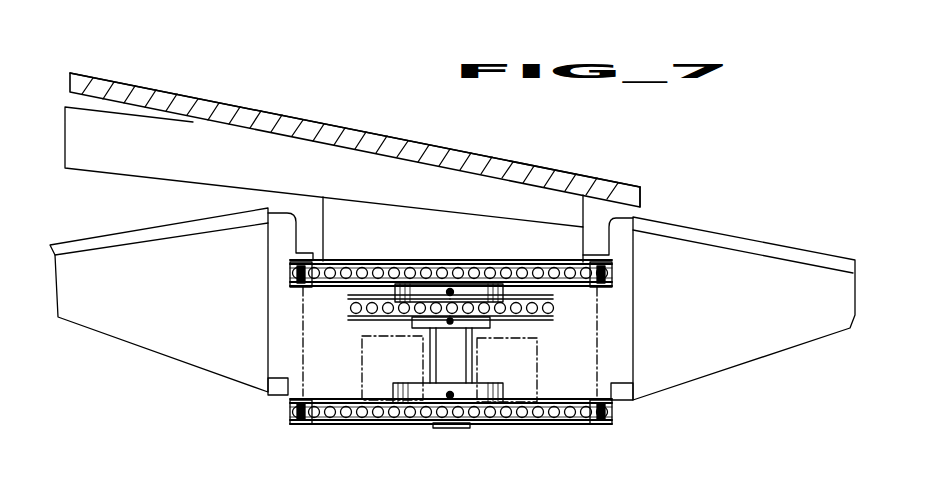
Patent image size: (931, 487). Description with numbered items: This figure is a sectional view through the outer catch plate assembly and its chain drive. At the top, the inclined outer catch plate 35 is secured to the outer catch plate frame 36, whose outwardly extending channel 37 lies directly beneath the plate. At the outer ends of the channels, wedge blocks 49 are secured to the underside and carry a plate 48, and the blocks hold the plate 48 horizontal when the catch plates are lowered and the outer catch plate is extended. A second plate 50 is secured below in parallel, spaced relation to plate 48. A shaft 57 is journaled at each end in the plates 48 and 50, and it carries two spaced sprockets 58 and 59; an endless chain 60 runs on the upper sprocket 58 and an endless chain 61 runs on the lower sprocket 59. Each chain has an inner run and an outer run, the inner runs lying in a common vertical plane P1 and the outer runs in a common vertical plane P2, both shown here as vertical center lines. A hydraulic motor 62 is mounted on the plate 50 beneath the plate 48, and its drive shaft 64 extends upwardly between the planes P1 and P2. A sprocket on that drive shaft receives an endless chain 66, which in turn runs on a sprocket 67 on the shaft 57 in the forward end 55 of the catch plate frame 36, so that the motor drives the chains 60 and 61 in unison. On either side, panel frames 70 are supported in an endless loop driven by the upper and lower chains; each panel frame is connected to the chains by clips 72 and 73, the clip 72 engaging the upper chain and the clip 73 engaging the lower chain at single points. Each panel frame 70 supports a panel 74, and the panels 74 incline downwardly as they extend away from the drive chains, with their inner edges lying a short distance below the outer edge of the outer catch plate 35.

The outer catch plate 35 is at (240, 105).
The outer catch plate frame 36 is at (332, 126).
The channel 37 is at (197, 161).
The plate 48 is at (498, 270).
The wedge block 49 is at (388, 236).
The plate 50 is at (338, 422).
The forward end 55 is at (647, 208).
The shaft 57 is at (430, 356).
The sprocket 58 is at (430, 272).
The sprocket 59 is at (478, 420).
The endless chain 60 is at (290, 271).
The endless chain 61 is at (290, 414).
The hydraulic motor 62 is at (362, 368).
The drive shaft 64 is at (477, 338).
The endless chain 66 is at (352, 305).
The sprocket 67 is at (538, 312).
The panel frame 70 is at (112, 290).
The clip 72 is at (295, 240).
The clip 73 is at (268, 397).
The panel 74 is at (82, 237).
The vertical plane P1 is at (280, 296).
The vertical plane P2 is at (604, 330).